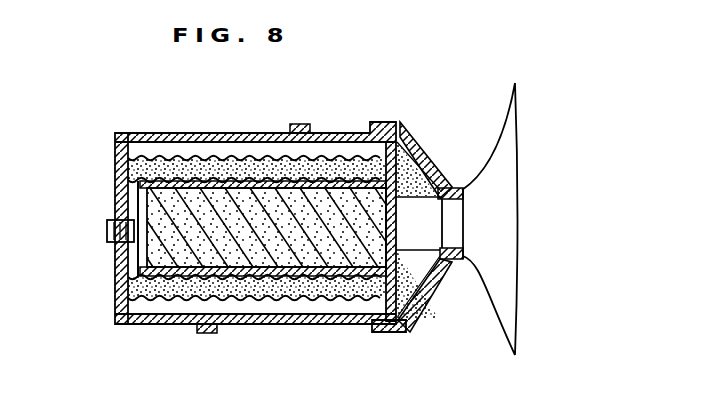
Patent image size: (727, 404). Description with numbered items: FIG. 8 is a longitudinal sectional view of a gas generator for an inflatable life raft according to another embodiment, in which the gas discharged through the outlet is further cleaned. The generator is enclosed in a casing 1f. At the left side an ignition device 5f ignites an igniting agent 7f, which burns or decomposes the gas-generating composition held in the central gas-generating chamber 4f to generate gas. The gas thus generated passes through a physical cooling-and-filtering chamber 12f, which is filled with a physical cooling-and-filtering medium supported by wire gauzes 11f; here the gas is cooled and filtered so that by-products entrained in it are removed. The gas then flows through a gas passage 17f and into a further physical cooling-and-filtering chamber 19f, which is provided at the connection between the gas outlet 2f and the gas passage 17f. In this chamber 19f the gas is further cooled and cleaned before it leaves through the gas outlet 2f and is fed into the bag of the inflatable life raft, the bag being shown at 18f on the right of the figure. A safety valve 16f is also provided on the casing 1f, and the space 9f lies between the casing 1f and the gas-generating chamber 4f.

The casing 1f is at (130, 133).
The gas outlet 2f is at (452, 218).
The gas-generating chamber 4f is at (302, 235).
The ignition device 5f is at (107, 232).
The igniting agent 7f is at (267, 277).
The gap 9f is at (135, 203).
The wire gauzes 11f is at (340, 160).
The physical cooling-and-filtering chamber 12f is at (165, 170).
The safety valve 16f is at (298, 130).
The gas passage 17f is at (195, 150).
The balloon 18f is at (493, 126).
The physical cooling-and-filtering chamber 19f is at (418, 150).